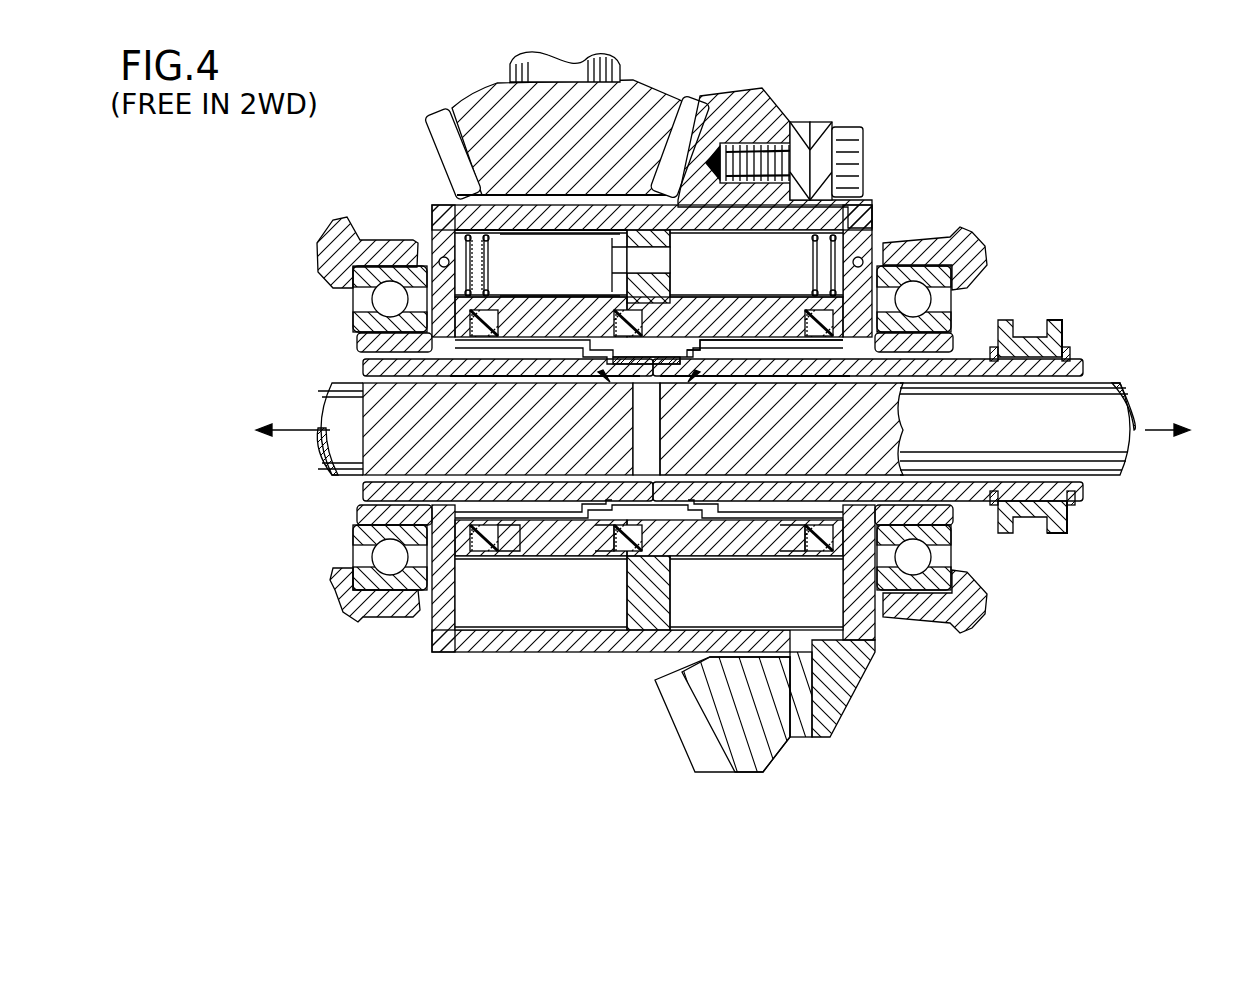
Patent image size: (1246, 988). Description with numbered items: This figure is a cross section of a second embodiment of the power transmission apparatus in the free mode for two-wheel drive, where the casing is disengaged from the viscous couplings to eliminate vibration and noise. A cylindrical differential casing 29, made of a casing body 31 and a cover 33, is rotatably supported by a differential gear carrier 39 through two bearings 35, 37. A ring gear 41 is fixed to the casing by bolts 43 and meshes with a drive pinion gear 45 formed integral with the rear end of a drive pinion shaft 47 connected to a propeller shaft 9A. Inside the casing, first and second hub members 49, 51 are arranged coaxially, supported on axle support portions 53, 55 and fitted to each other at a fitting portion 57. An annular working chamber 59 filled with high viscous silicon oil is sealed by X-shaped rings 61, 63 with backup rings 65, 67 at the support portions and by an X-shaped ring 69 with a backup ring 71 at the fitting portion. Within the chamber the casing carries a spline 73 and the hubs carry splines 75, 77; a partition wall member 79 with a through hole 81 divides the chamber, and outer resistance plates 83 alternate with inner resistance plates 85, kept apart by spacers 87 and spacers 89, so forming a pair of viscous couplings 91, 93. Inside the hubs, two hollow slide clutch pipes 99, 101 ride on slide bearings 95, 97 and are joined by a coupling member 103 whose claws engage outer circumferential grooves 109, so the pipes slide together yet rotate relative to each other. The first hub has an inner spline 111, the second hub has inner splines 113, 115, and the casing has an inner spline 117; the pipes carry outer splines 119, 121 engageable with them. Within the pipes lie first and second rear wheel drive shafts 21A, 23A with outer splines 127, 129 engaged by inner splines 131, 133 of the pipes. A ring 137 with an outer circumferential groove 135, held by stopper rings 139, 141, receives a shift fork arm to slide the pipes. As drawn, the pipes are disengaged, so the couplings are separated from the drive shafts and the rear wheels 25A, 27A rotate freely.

The propeller shaft 9A is at (557, 117).
The first rear wheel drive shaft 21A is at (330, 476).
The second rear wheel drive shaft 23A is at (1090, 470).
The rear wheel 25A is at (269, 428).
The rear wheel 27A is at (1186, 428).
The differential casing 29 is at (796, 130).
The casing body 31 is at (800, 128).
The cover 33 is at (822, 128).
The bearing 35 is at (352, 305).
The bearing 37 is at (935, 265).
The differential gear carrier 39 is at (930, 252).
The ring gear 41 is at (712, 97).
The bolt 43 is at (856, 136).
The drive pinion gear 45 is at (470, 110).
The drive pinion shaft 47 is at (515, 72).
The first hub member 49 is at (611, 610).
The second hub member 51 is at (707, 638).
The axle support portion 53 is at (520, 515).
The axle support portion 55 is at (800, 512).
The fitting portion 57 is at (595, 510).
The working chamber 59 is at (562, 274).
The X-shaped ring 61 is at (488, 552).
The X-shaped ring 63 is at (820, 552).
The backup ring 65 is at (510, 552).
The backup ring 67 is at (798, 552).
The X-shaped ring 69 is at (628, 552).
The backup ring 71 is at (600, 552).
The spline 73 is at (608, 250).
The spline 75 is at (649, 316).
The spline 77 is at (728, 316).
The partition wall member 79 is at (620, 244).
The through hole 81 is at (662, 263).
The outer resistance plate 83 is at (470, 238).
The inner resistance plate 85 is at (478, 295).
The spacer 87 is at (458, 228).
The spacer 89 is at (488, 255).
The viscous coupling 91 is at (575, 213).
The viscous coupling 93 is at (896, 190).
The slide bearing 95 is at (440, 505).
The slide bearing 97 is at (895, 500).
The slide clutch pipe 99 is at (372, 380).
The slide clutch pipe 101 is at (955, 378).
The coupling member 103 is at (660, 380).
The outer circumferential groove 109 is at (608, 384).
The inner spline 111 is at (582, 352).
The inner spline 113 is at (660, 350).
The inner spline 115 is at (750, 352).
The inner spline 117 is at (805, 345).
The outer spline 119 is at (515, 352).
The outer spline 121 is at (700, 350).
The outer spline 127 is at (585, 382).
The outer spline 129 is at (825, 376).
The inner spline 131 is at (503, 376).
The inner spline 133 is at (792, 380).
The outer circumferential groove 135 is at (1022, 332).
The ring 137 is at (1058, 332).
The stopper ring 139 is at (992, 516).
The stopper ring 141 is at (1068, 508).